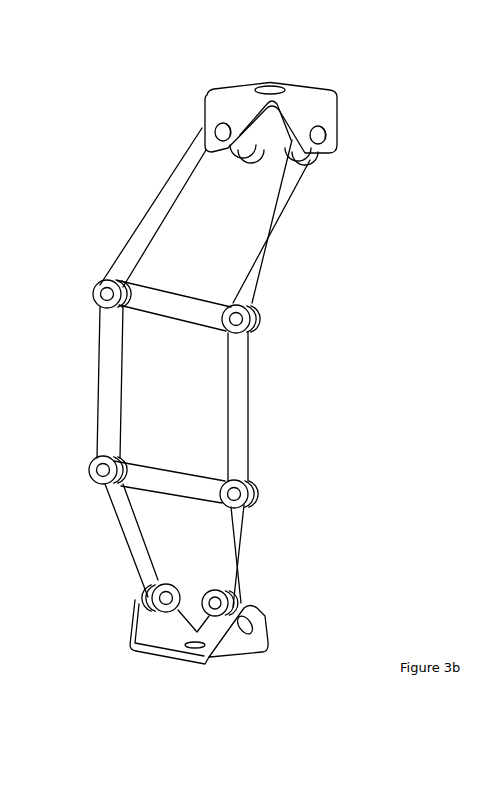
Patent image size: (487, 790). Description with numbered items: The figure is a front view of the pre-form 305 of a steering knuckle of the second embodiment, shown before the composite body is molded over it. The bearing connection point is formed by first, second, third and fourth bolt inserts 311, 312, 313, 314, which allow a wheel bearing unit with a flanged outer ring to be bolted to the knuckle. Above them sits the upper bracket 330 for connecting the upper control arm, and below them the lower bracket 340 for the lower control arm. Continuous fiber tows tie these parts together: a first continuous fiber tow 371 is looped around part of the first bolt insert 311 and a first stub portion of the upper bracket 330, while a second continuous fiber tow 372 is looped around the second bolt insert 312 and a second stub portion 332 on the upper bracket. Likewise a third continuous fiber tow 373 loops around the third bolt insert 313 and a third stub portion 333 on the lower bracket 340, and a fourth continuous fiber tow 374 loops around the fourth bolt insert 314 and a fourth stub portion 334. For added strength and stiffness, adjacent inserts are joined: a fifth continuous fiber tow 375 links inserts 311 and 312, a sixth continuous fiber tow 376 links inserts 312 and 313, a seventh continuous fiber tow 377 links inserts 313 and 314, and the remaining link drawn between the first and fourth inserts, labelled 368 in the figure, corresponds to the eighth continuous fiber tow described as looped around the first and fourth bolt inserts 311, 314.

The pre-form 305 is at (352, 220).
The first bolt insert 311 is at (100, 280).
The second bolt insert 312 is at (262, 305).
The third bolt insert 313 is at (258, 493).
The fourth bolt insert 314 is at (92, 480).
The upper bracket 330 is at (305, 105).
The second stub portion 332 is at (290, 146).
The third stub portion 333 is at (230, 600).
The fourth stub portion 334 is at (148, 610).
The lower bracket 340 is at (233, 648).
The left vertical link 368 is at (97, 376).
The first continuous fiber tow 371 is at (150, 212).
The second continuous fiber tow 372 is at (292, 197).
The third continuous fiber tow 373 is at (237, 572).
The fourth continuous fiber tow 374 is at (125, 540).
The fifth continuous fiber tow 375 is at (173, 319).
The sixth continuous fiber tow 376 is at (250, 416).
The seventh continuous fiber tow 377 is at (167, 467).